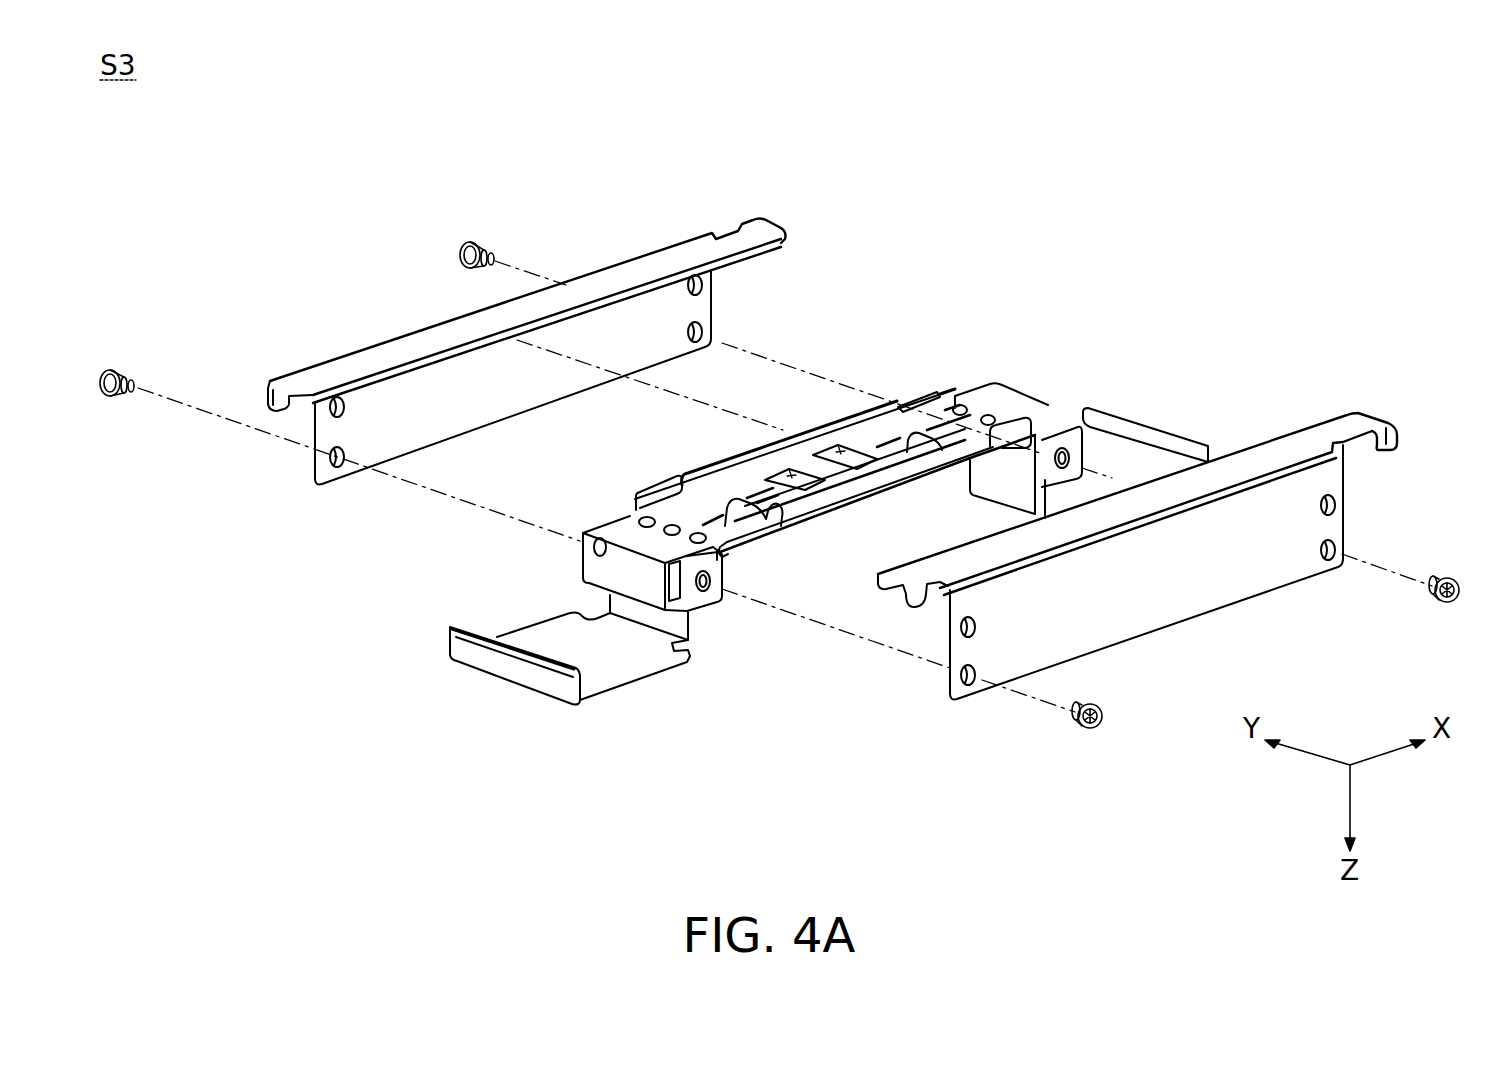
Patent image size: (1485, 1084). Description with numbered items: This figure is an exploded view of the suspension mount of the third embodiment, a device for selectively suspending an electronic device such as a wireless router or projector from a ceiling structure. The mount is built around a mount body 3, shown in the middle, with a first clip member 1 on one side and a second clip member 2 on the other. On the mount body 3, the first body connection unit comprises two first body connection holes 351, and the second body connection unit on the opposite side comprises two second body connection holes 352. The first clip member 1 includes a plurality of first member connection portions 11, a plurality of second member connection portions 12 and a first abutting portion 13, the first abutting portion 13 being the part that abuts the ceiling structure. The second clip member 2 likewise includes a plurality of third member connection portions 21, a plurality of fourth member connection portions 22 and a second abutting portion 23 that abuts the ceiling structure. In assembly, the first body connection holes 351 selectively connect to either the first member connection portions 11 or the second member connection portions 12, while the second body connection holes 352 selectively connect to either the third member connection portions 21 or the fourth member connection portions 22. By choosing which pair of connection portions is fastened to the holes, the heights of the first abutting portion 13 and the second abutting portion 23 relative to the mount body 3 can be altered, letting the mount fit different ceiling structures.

The first clip member 1 is at (1167, 555).
The first member connection portions 11 is at (1340, 550).
The second member connection portions 12 is at (1340, 506).
The first abutting portion 13 is at (1282, 448).
The second clip member 2 is at (527, 365).
The third member connection portions 21 is at (705, 332).
The fourth member connection portions 22 is at (706, 284).
The second abutting portion 23 is at (624, 270).
The mount body 3 is at (840, 517).
The first body connection holes 351 is at (1078, 440).
The second body connection holes 352 is at (990, 410).